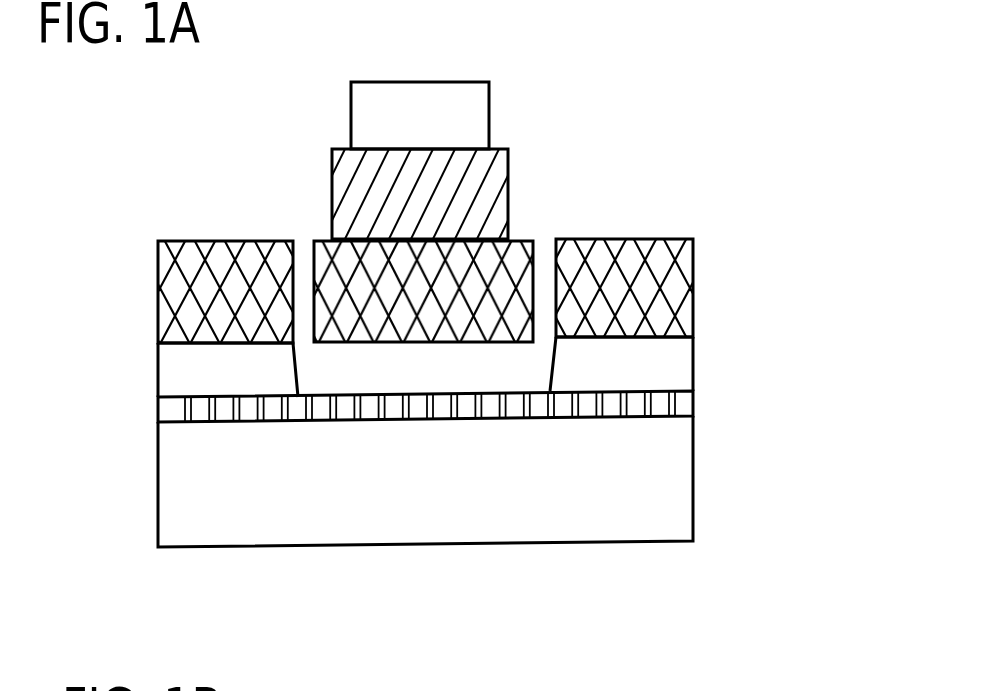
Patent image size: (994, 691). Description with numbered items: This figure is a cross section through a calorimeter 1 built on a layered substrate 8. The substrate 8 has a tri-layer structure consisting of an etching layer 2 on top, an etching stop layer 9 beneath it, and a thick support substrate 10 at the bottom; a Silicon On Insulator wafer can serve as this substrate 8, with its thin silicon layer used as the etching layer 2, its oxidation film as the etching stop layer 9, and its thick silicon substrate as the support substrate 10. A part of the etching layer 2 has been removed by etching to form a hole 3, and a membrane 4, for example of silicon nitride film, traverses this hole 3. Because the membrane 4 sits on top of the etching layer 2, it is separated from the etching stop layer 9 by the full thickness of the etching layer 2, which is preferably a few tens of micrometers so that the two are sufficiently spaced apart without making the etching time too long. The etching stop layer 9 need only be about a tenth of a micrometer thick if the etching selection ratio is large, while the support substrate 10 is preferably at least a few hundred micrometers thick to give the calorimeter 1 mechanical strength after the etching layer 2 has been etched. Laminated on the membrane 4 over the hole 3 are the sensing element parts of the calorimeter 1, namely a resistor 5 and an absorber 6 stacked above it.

The calorimeter 1 is at (77, 93).
The etching layer 2 is at (665, 378).
The hole 3 is at (467, 361).
The membrane 4 is at (340, 255).
The resistor 5 is at (487, 200).
The absorber 6 is at (462, 109).
The substrate 8 is at (143, 350).
The etching stop layer 9 is at (682, 400).
The support substrate 10 is at (613, 483).